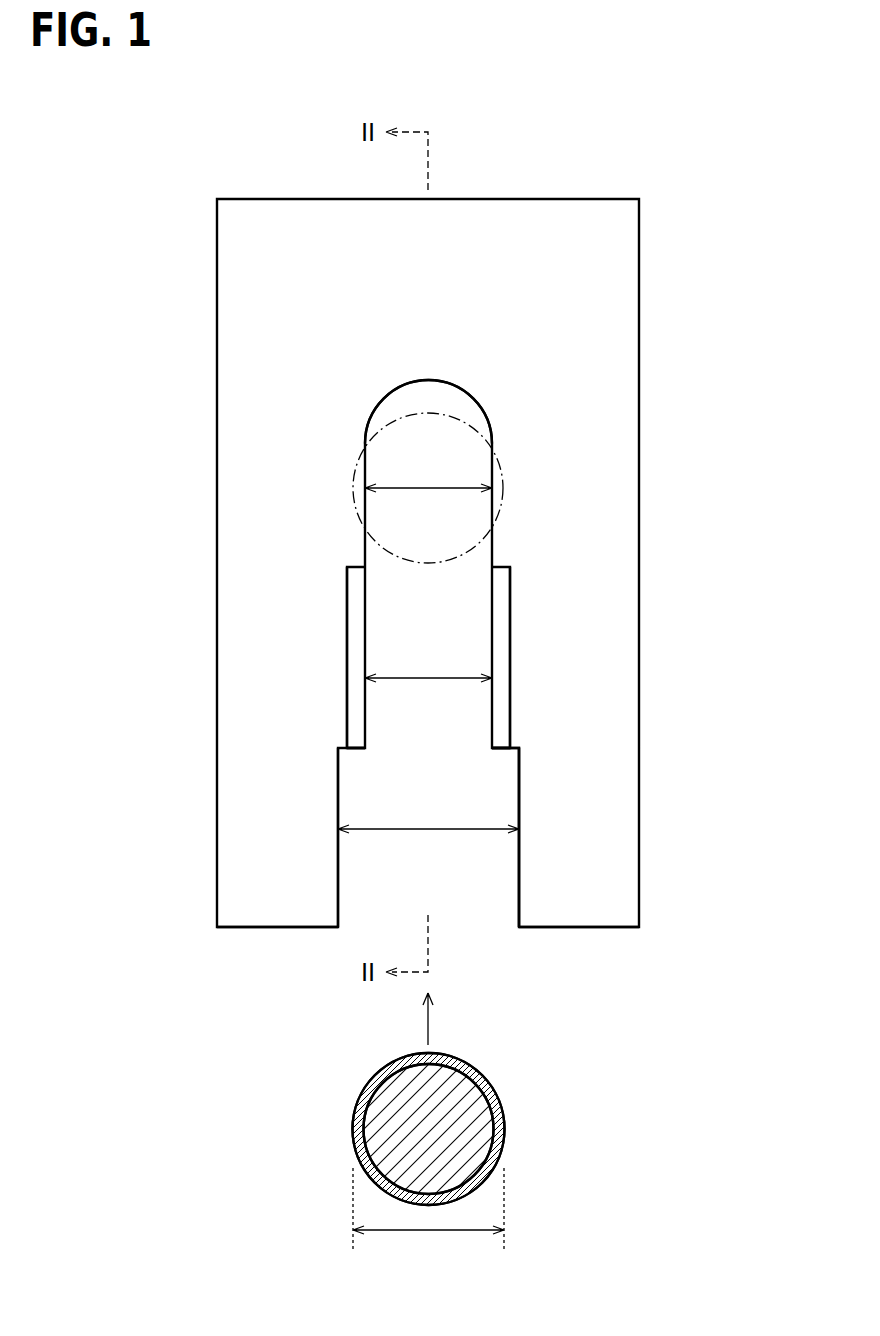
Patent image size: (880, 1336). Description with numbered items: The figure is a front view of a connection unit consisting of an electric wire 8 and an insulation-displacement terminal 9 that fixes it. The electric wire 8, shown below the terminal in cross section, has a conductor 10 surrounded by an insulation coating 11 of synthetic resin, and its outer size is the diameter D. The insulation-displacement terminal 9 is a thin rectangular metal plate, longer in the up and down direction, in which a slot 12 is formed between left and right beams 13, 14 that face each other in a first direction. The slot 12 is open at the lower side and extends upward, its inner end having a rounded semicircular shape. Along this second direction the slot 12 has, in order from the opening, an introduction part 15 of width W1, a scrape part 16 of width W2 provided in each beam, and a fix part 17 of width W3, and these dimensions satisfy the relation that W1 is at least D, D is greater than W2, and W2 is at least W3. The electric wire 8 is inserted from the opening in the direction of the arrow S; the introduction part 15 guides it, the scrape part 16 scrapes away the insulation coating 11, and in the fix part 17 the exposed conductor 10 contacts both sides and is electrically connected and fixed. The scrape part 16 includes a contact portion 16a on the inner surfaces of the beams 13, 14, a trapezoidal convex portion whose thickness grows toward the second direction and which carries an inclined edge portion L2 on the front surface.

The electric wire 8 is at (466, 420).
The insulation-displacement terminal 9 is at (648, 260).
The conductor 10 is at (380, 1127).
The insulation coating 11 is at (487, 1077).
The slot 12 is at (485, 913).
The beam 13 is at (237, 886).
The beam 14 is at (618, 885).
The introduction part 15 is at (508, 885).
The scrape part 16 is at (485, 632).
The contact portion 16a is at (370, 705).
The fix part 17 is at (372, 460).
The dimension of the introduction part W1 is at (428, 815).
The dimension of the scrape part W2 is at (428, 665).
The dimension of the fix part W3 is at (428, 475).
The edge portion L2 is at (365, 657).
The dimension of diameter of the electric wire D is at (428, 1217).
The arrow S is at (433, 1022).